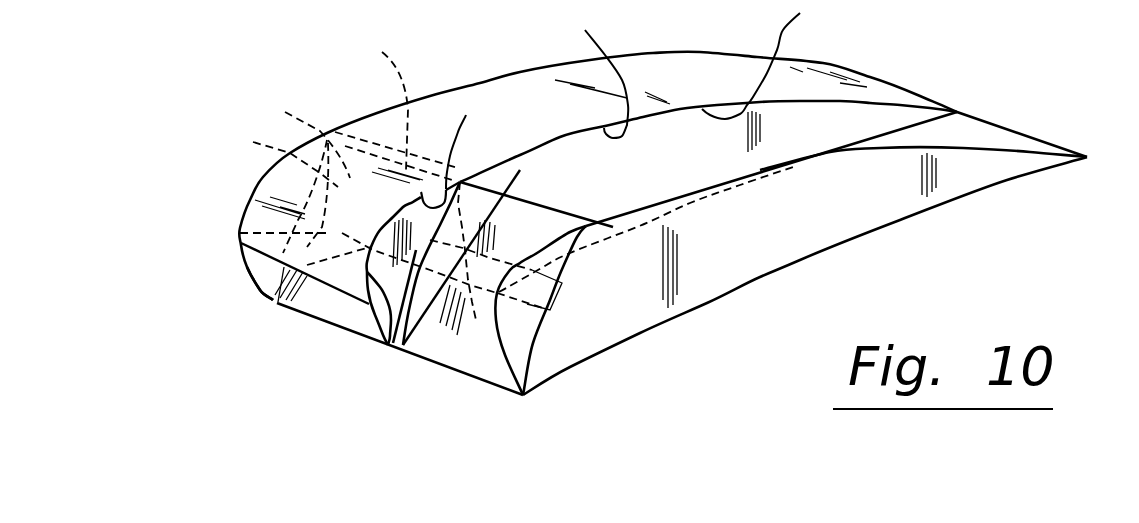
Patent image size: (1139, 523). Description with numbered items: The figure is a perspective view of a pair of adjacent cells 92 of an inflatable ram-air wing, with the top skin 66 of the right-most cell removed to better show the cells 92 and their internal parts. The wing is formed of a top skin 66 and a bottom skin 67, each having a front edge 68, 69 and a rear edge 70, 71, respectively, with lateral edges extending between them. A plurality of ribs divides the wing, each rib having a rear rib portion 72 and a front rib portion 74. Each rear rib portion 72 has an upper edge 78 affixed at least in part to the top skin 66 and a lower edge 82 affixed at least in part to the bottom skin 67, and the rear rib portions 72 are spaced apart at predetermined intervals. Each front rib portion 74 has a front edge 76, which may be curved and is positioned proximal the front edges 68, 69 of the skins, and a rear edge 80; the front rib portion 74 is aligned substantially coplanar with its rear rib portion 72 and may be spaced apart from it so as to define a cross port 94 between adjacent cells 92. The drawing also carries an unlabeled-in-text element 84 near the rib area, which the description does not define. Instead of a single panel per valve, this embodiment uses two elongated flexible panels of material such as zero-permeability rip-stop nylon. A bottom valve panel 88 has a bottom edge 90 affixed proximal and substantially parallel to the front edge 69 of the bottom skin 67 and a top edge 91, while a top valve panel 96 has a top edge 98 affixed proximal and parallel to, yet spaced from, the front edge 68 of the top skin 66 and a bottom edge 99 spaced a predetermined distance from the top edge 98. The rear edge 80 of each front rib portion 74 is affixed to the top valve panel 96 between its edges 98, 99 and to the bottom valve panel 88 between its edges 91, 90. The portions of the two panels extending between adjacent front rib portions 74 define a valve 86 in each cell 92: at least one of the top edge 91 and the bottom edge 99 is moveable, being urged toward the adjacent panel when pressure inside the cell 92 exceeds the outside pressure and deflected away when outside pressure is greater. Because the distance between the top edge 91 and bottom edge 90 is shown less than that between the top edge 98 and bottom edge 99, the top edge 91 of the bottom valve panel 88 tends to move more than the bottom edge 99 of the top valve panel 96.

The top skin 66 is at (690, 73).
The bottom skin 67 is at (927, 138).
The front edge of the top skin 68 is at (247, 272).
The front edge of the bottom skin 69 is at (527, 396).
The rear edge of the top skin 70 is at (880, 85).
The rear edge of the bottom skin 71 is at (1030, 141).
The rear rib portion 72 is at (707, 170).
The front rib portion 74 is at (403, 207).
The front edge of the front rib portion 76 is at (386, 344).
The upper edge of the rear rib portion 78 is at (703, 76).
The rear edge of the front rib portion 80 is at (386, 348).
The lower edge of the rear rib portion 82 is at (690, 203).
The rib 84 is at (480, 144).
The valve 86 is at (337, 232).
The bottom valve panel 88 is at (280, 305).
The bottom edge of the bottom valve panel 90 is at (327, 321).
The top edge of the bottom valve panel 91 is at (497, 293).
The cell 92 is at (531, 101).
The cross port 94 is at (462, 175).
The top valve panel 96 is at (603, 193).
The top edge of the top valve panel 98 is at (573, 163).
The bottom edge of the top valve panel 99 is at (383, 236).